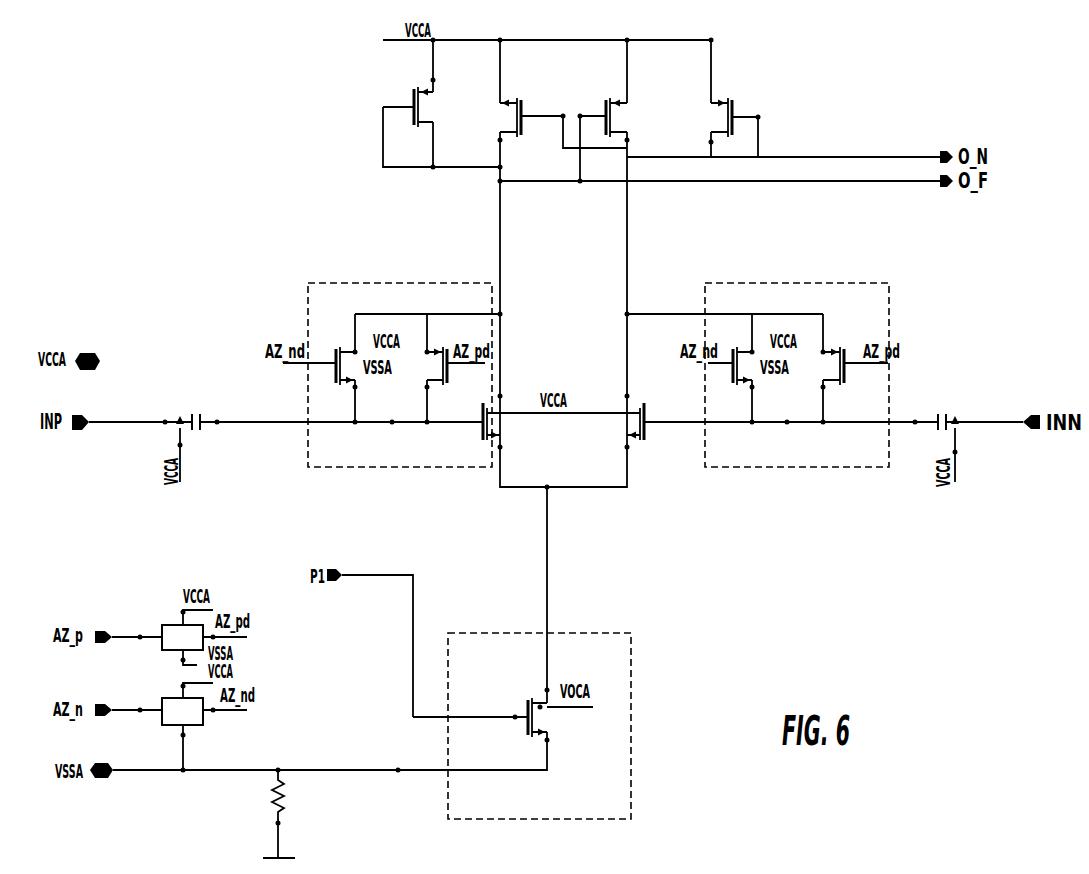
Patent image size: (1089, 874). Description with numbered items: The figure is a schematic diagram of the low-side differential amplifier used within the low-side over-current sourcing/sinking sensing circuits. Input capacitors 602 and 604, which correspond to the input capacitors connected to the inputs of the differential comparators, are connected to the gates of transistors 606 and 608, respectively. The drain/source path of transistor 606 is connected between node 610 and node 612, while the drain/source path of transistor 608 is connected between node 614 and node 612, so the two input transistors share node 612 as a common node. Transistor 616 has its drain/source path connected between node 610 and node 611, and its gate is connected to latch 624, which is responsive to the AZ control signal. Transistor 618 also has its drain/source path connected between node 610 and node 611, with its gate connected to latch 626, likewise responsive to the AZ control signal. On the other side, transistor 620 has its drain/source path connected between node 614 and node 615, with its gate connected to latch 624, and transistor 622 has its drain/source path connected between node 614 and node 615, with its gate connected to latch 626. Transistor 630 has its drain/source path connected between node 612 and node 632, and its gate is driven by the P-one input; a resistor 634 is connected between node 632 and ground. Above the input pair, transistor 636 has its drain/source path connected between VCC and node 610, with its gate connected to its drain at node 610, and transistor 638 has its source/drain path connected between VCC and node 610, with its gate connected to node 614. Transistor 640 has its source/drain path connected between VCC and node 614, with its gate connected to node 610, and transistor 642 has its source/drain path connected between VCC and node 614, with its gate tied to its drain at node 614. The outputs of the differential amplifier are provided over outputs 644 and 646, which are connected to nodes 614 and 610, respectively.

The input capacitor 602 is at (203, 437).
The input capacitor 604 is at (945, 403).
The transistor 606 is at (507, 423).
The transistor 608 is at (640, 445).
The node 610 is at (503, 313).
The node 611 is at (392, 422).
The node 612 is at (550, 490).
The node 614 is at (630, 313).
The node 615 is at (787, 422).
The transistor 616 is at (332, 332).
The transistor 618 is at (440, 340).
The transistor 620 is at (743, 345).
The transistor 622 is at (835, 345).
The latch 624 is at (208, 720).
The latch 626 is at (207, 640).
The transistor 630 is at (582, 716).
The node 632 is at (400, 773).
The resistor 634 is at (293, 795).
The transistor 636 is at (422, 82).
The transistor 638 is at (505, 100).
The transistor 640 is at (617, 98).
The transistor 642 is at (717, 100).
The output 644 is at (943, 148).
The output 646 is at (943, 187).